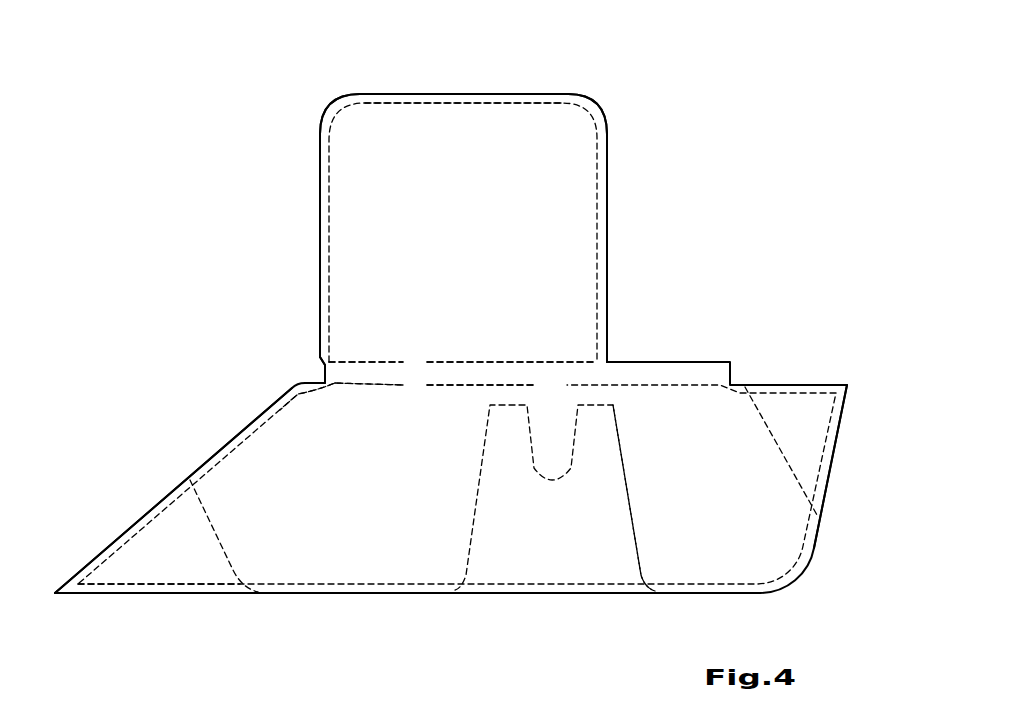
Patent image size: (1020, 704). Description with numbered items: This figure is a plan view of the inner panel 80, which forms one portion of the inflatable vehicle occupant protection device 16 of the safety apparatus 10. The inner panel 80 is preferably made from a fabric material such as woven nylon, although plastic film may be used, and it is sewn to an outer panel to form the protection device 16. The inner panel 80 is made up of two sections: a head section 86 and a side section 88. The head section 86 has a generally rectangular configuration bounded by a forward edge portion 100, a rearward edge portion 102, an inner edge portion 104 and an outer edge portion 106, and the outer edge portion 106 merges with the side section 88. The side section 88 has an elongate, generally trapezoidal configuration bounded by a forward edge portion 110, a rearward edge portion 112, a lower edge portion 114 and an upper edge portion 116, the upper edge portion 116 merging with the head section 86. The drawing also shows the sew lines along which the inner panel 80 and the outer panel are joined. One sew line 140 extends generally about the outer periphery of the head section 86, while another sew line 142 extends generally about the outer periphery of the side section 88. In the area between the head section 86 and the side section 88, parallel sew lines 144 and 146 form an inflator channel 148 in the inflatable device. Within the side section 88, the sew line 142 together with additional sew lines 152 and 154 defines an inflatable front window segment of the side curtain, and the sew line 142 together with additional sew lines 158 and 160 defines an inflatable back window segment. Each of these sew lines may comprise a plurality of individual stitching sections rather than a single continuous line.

The safety apparatus 10 is at (190, 208).
The inflatable vehicle occupant protection device 16 is at (194, 245).
The inner panel 80 is at (178, 298).
The head section 86 is at (268, 166).
The side section 88 is at (180, 422).
The forward edge portion 100 is at (320, 222).
The rearward edge portion 102 is at (608, 215).
The inner edge portion 104 is at (483, 94).
The outer edge portion 106 is at (475, 347).
The forward edge portion 110 is at (130, 522).
The rearward edge portion 112 is at (832, 467).
The lower edge portion 114 is at (355, 593).
The upper edge portion 116 is at (352, 403).
The sew line 140 is at (432, 102).
The sew line 142 is at (141, 584).
The sew line 144 is at (377, 362).
The sew line 146 is at (372, 383).
The inflator channel 148 is at (455, 373).
The sew line 152 is at (215, 543).
The sew line 154 is at (473, 532).
The sew line 158 is at (635, 540).
The sew line 160 is at (780, 442).